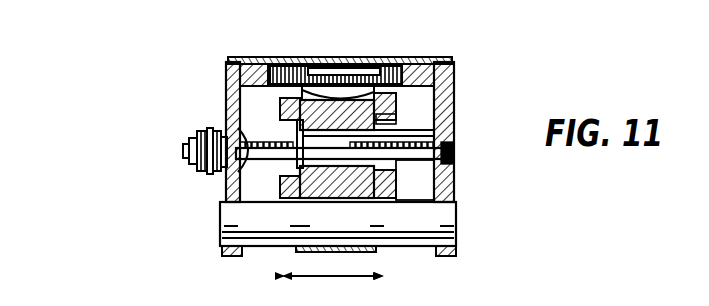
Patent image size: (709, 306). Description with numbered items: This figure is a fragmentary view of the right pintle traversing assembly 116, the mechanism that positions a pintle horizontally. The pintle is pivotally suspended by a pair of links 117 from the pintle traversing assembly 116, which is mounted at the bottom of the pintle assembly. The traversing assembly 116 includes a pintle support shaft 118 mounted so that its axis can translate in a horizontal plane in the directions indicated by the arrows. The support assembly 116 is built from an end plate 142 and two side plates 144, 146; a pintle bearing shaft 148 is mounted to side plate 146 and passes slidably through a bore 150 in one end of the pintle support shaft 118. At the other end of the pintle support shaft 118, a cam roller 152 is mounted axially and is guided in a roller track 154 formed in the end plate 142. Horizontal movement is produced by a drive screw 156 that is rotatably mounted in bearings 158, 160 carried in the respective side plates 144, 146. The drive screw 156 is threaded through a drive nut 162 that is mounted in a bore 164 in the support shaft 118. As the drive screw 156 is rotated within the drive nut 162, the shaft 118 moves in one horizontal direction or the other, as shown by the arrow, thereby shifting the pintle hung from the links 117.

The pintle traversing assembly 116 is at (150, 44).
The links 117 is at (386, 94).
The pintle support shaft 118 is at (386, 178).
The end plate 142 is at (428, 62).
The side plate 144 is at (226, 88).
The side plate 146 is at (456, 76).
The pintle bearing shaft 148 is at (444, 216).
The bore 150 is at (300, 204).
The cam roller 152 is at (346, 66).
The roller track 154 is at (293, 58).
The drive screw 156 is at (230, 120).
The bearing 158 is at (454, 148).
The bearing 160 is at (218, 176).
The drive nut 162 is at (312, 198).
The bore 164 is at (382, 120).